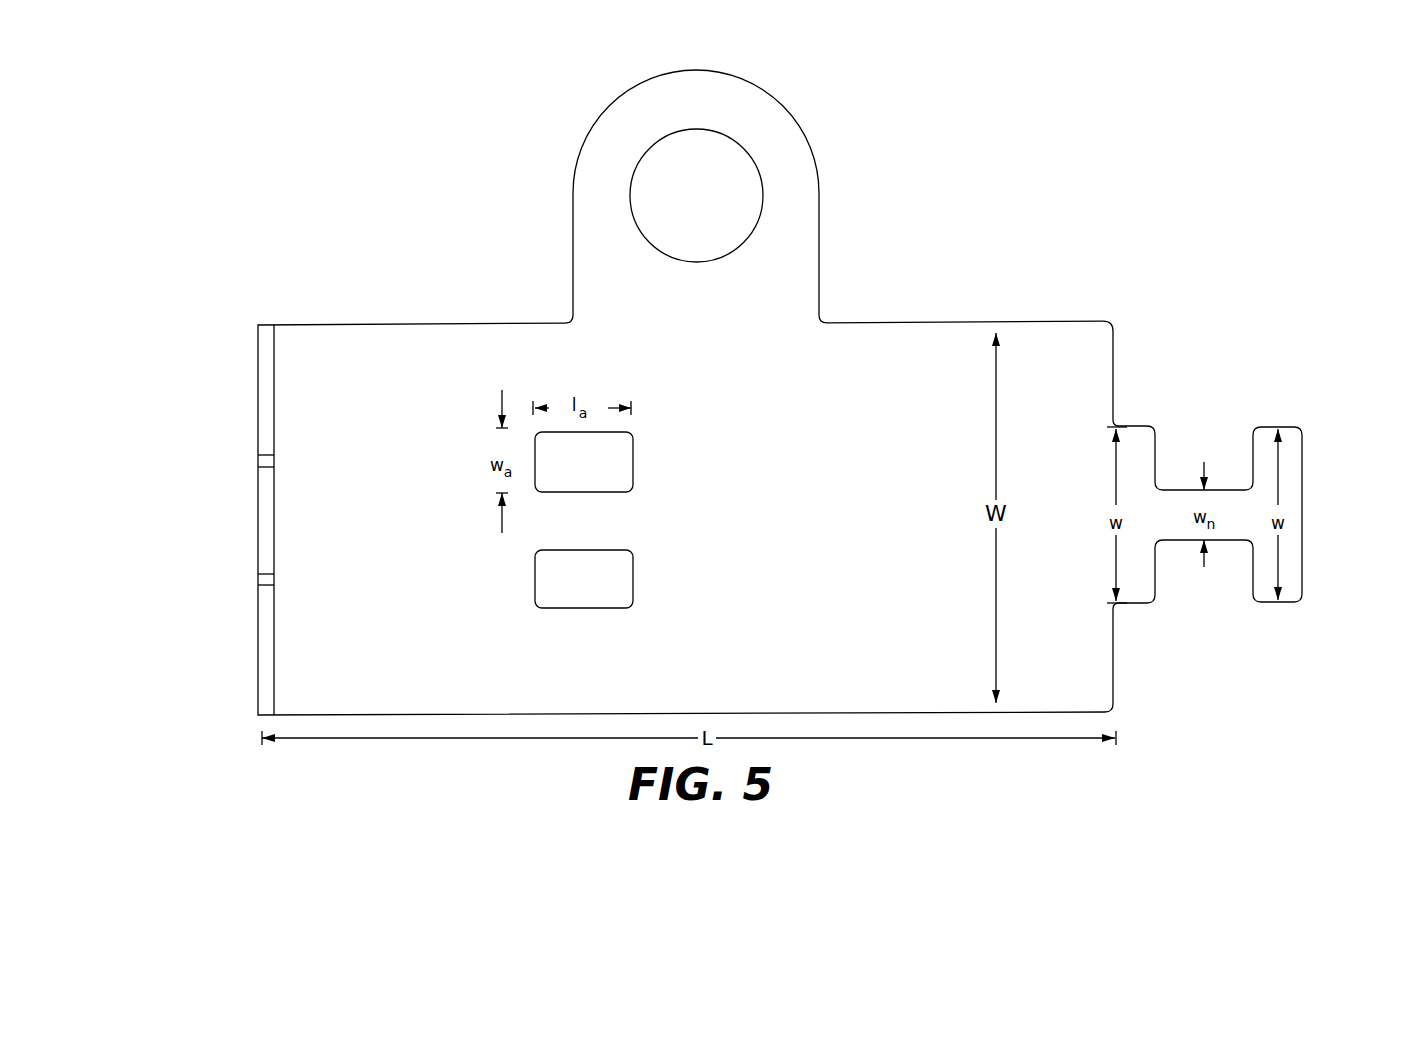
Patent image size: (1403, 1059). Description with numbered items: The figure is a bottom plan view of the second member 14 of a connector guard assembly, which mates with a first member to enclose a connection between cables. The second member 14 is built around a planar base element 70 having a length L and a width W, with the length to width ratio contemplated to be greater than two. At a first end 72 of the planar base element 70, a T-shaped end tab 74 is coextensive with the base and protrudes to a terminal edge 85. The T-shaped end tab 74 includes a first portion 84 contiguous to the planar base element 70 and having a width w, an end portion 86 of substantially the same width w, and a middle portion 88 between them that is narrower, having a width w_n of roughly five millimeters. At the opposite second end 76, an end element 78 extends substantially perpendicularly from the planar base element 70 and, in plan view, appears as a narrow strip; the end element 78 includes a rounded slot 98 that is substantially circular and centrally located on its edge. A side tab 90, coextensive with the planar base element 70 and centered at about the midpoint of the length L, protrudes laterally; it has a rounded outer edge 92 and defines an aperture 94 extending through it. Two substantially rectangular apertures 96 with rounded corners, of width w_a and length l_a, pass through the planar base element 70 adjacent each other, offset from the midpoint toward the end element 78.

The second member 14 is at (1054, 278).
The planar base element 70 is at (867, 552).
The first end 72 is at (1130, 365).
The T-shaped end tab 74 is at (1294, 400).
The second end 76 is at (253, 727).
The end element 78 is at (259, 637).
The first portion 84 is at (1133, 605).
The terminal edge 85 is at (1302, 510).
The end portion 86 is at (1277, 603).
The middle portion 88 is at (1168, 541).
The side tab 90 is at (790, 145).
The rounded outer edge 92 is at (703, 70).
The aperture 94 is at (675, 185).
The apertures 96 is at (633, 462).
The rounded slot 98 is at (259, 511).